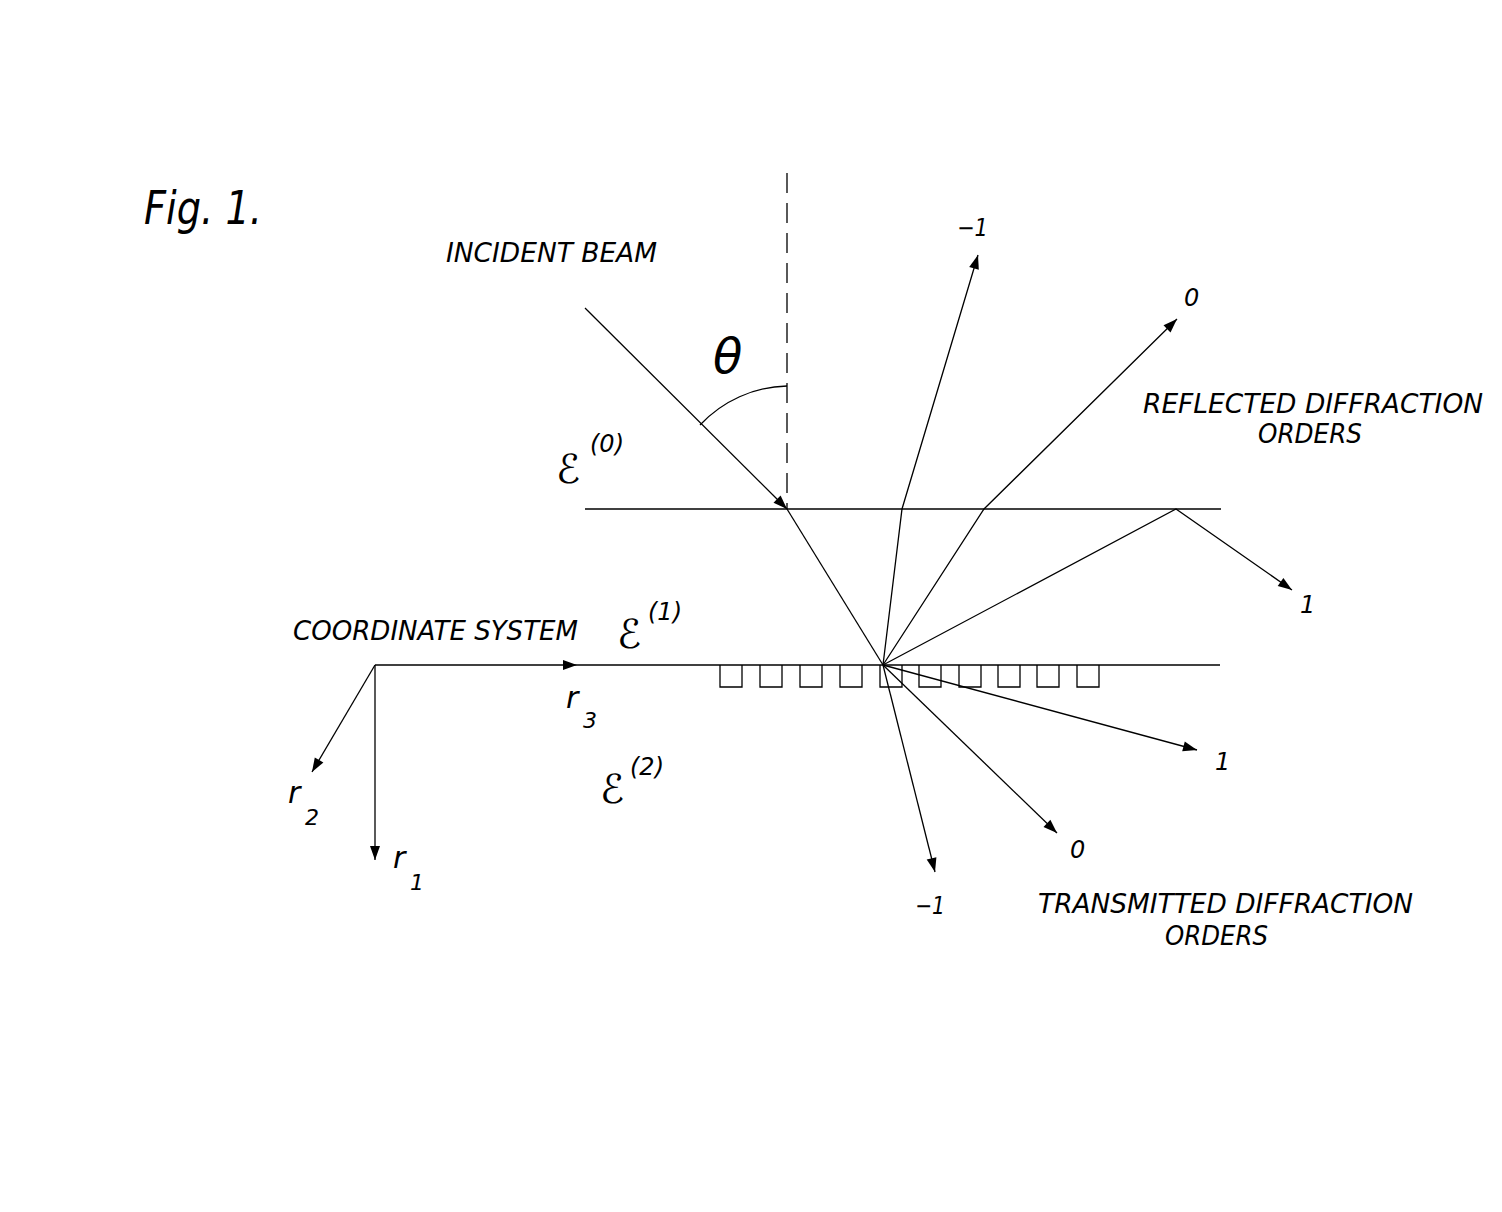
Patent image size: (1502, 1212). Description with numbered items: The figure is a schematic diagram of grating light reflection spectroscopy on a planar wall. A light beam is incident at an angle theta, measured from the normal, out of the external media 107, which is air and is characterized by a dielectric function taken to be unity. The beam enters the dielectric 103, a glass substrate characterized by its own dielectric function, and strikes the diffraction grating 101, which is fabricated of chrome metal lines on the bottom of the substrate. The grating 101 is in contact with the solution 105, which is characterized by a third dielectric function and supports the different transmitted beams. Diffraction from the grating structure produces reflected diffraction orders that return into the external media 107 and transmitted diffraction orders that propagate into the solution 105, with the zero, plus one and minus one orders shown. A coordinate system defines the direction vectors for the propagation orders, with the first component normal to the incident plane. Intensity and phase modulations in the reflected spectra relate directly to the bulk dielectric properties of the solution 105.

The diffraction grating 101 is at (732, 687).
The dielectric 103 is at (587, 555).
The solution 105 is at (827, 903).
The external media 107 is at (892, 349).